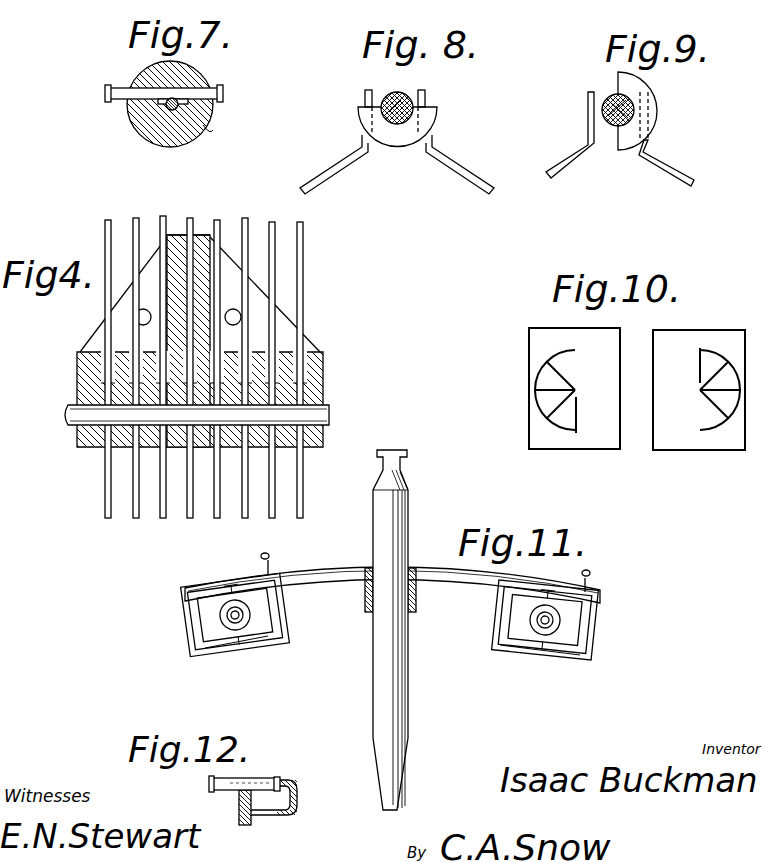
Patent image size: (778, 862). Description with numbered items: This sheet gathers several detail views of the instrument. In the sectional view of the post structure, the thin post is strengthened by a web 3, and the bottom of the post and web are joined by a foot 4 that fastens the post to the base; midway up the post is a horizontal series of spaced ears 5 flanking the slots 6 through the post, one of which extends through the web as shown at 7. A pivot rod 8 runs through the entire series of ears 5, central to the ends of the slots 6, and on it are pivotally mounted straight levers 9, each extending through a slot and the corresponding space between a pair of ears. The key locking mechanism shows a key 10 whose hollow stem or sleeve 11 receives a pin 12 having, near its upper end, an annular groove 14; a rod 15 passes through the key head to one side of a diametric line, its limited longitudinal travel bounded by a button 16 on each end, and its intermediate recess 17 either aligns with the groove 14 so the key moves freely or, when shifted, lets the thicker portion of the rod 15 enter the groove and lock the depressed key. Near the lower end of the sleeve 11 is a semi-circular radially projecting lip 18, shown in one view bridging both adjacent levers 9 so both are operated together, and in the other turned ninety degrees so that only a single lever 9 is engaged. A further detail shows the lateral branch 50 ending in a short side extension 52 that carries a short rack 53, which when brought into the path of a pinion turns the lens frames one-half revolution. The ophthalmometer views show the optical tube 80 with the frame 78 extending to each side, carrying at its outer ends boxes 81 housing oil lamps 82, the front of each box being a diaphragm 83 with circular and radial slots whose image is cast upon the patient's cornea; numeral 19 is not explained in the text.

In FIG. 4, the web 3 is at (203, 307).
In FIG. 4, the foot 4 is at (283, 338).
In FIG. 4, the ears 5 is at (82, 443).
In FIG. 4, the slots 6 is at (97, 352).
In FIG. 4, the passage through the web 7 is at (197, 263).
In FIG. 4, the rod 8 is at (66, 406).
In FIG. 8, the levers 9 is at (440, 167).
In FIG. 9, the levers 9 is at (670, 170).
In FIG. 4, the levers 9 is at (105, 490).
In FIG. 7, the key 10 is at (140, 68).
In FIG. 9, the sleeve 11 is at (640, 120).
In FIG. 7, the pin 12 is at (172, 104).
In FIG. 8, the pin 12 is at (381, 104).
In FIG. 9, the pin 12 is at (603, 113).
In FIG. 7, the annular groove 14 is at (172, 103).
In FIG. 7, the rod 15 is at (205, 125).
In FIG. 7, the button 16 is at (106, 95).
In FIG. 7, the recess 17 is at (158, 98).
In FIG. 8, the lip 18 is at (420, 118).
In FIG. 9, the lip 18 is at (635, 90).
In FIG. 8, the pin head 19 is at (390, 98).
In FIG. 12, the lateral branch 50 is at (228, 808).
In FIG. 12, the side extension 52 is at (270, 818).
In FIG. 12, the rack 53 is at (280, 780).
In FIG. 11, the frame 78 is at (460, 577).
In FIG. 11, the optical tube 80 is at (388, 546).
In FIG. 11, the boxes 81 is at (186, 630).
In FIG. 11, the lamps 82 is at (250, 621).
In FIG. 10, the diaphragm 83 is at (572, 440).
In FIG. 11, the diaphragm 83 is at (250, 646).